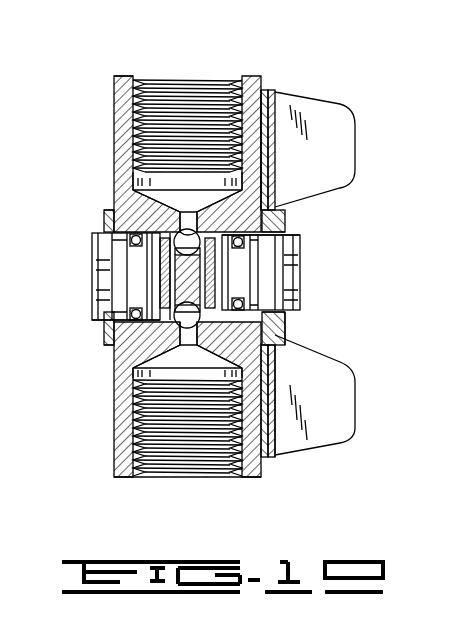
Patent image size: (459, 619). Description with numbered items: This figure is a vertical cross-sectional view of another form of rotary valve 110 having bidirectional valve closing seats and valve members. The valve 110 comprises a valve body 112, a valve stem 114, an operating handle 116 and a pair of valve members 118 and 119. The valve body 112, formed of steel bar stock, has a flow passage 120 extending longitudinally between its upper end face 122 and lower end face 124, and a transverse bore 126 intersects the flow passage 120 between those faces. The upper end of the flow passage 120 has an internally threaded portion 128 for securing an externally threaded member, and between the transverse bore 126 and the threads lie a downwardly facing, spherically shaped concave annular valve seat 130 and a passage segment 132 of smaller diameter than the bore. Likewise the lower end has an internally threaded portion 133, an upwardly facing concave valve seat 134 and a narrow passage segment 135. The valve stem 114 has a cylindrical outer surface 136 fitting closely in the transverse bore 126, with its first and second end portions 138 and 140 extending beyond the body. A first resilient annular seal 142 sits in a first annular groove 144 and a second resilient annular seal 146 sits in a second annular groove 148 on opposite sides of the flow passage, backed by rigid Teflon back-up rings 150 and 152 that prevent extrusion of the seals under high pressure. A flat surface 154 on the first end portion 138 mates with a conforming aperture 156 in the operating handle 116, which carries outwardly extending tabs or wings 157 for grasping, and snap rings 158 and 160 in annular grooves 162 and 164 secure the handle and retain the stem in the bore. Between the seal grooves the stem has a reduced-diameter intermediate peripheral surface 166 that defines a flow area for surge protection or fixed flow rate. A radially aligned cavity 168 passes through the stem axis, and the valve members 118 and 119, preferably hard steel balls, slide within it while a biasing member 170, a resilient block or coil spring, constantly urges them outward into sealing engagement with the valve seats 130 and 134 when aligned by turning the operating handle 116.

The rotary valve 110 is at (240, 58).
The valve body 112 is at (265, 80).
The valve stem 114 is at (298, 266).
The operating handle 116 is at (275, 92).
The valve member 118 is at (120, 278).
The valve member 119 is at (112, 338).
The flow passage 120 is at (185, 228).
The upper end face 122 is at (118, 76).
The lower end face 124 is at (120, 478).
The transverse bore 126 is at (125, 262).
The internally threaded portion 128 is at (134, 110).
The valve seat 130 is at (258, 192).
The passage segment 132 is at (268, 180).
The internally threaded portion 133 is at (135, 447).
The valve seat 134 is at (215, 352).
The passage segment 135 is at (195, 370).
The cylindrical outer surface 136 is at (104, 222).
The first end portion 138 is at (290, 300).
The second end portion 140 is at (118, 318).
The first resilient annular seal 142 is at (266, 375).
The first annular groove 144 is at (268, 318).
The second resilient annular seal 146 is at (185, 350).
The second annular groove 148 is at (178, 285).
The first back-up ring 150 is at (272, 355).
The second back-up ring 152 is at (180, 340).
The flat surface 154 is at (285, 335).
The aperture 156 is at (300, 250).
The tabs or wings 157 is at (355, 150).
The snap ring 158 is at (284, 230).
The snap ring 160 is at (106, 219).
The annular groove 162 is at (215, 272).
The annular groove 164 is at (163, 292).
The intermediate peripheral surface 166 is at (134, 236).
The cavity 168 is at (134, 318).
The biasing member 170 is at (268, 440).